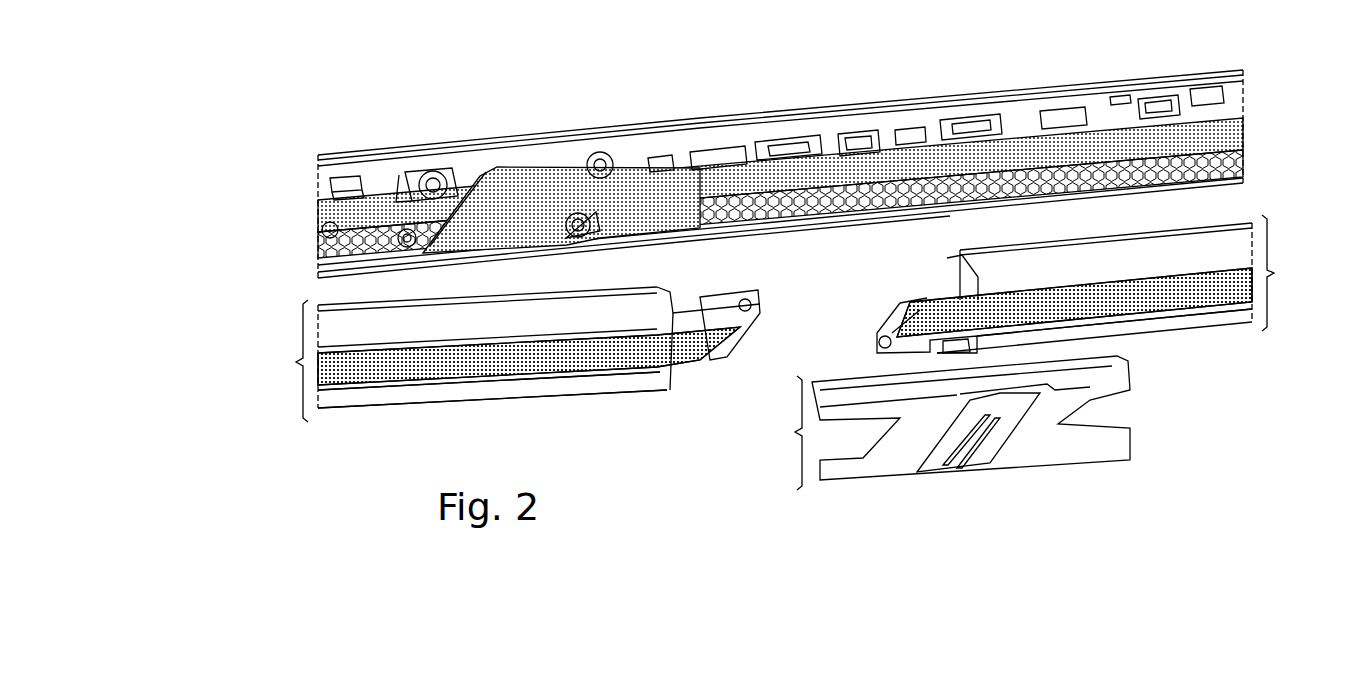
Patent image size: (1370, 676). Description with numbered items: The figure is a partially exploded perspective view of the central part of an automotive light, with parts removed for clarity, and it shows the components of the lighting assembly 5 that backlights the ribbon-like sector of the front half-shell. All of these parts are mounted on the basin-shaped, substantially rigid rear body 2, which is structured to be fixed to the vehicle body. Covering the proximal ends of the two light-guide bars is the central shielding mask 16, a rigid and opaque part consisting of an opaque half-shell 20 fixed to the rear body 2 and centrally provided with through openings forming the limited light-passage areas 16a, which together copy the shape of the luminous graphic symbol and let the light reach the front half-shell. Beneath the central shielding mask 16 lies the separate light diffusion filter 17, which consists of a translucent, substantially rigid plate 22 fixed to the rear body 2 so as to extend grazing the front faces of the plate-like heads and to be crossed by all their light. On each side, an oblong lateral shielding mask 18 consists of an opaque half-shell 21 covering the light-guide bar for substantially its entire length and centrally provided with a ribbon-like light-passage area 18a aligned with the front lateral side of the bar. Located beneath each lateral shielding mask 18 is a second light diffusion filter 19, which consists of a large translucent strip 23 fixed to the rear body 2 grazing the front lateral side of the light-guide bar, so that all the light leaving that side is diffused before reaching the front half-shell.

The rear body 2 is at (408, 150).
The lighting assembly 5 is at (1203, 458).
The central shielding mask 16 is at (944, 450).
The light-passage areas 16a is at (968, 462).
The light diffusion filter 17 is at (518, 228).
The lateral shielding mask 18 is at (787, 318).
The light-passage area 18a is at (441, 378).
The second light diffusion filter 19 is at (328, 240).
The opaque half-shell 20 is at (1040, 452).
The opaque half-shell 21 is at (600, 381).
The translucent plate 22 is at (508, 195).
The translucent strip 23 is at (360, 218).